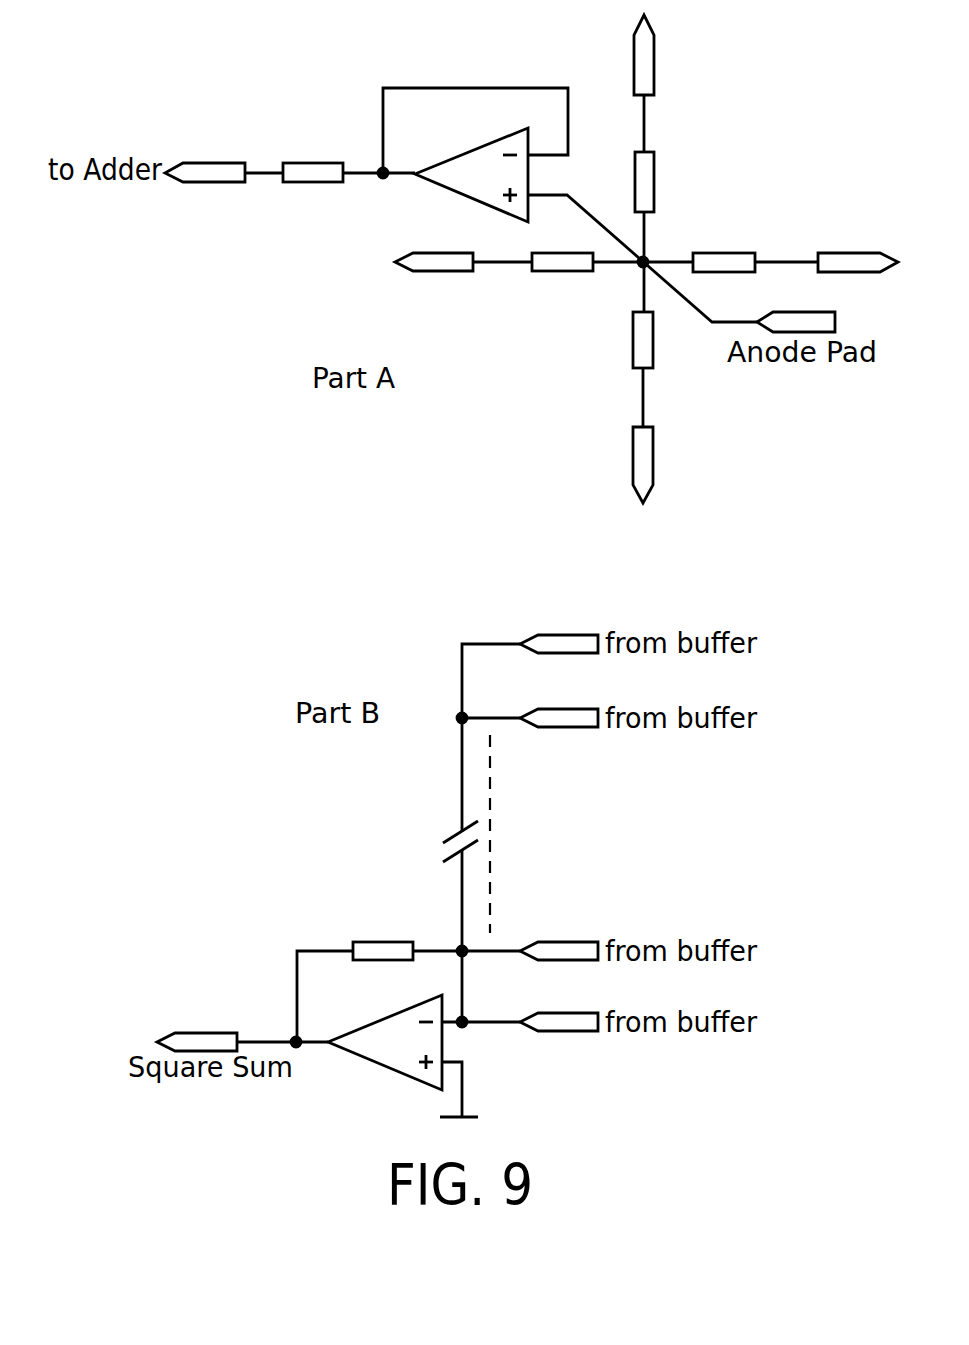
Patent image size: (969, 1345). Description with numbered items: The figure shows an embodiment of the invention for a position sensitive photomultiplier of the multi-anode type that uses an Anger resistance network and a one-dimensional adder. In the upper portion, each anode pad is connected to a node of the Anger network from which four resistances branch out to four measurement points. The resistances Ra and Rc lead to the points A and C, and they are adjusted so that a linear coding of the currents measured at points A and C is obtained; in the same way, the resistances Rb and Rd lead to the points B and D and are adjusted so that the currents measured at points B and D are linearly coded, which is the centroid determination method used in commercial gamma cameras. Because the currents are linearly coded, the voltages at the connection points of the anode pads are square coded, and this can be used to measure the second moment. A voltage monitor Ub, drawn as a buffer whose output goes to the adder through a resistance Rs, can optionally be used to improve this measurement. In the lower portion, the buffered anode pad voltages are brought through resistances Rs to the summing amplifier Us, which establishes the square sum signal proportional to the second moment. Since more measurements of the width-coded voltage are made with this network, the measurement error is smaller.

The summing resistance Rs is at (348, 543).
The voltage monitor Ub is at (471, 170).
The resistance Rd is at (664, 182).
The resistance Ra is at (562, 278).
The resistance Rb is at (621, 340).
The resistance Rc is at (724, 244).
The summing amplifier Us is at (385, 1037).
The measurement point A is at (434, 278).
The measurement point B is at (654, 465).
The measurement point C is at (858, 244).
The measurement point D is at (657, 55).